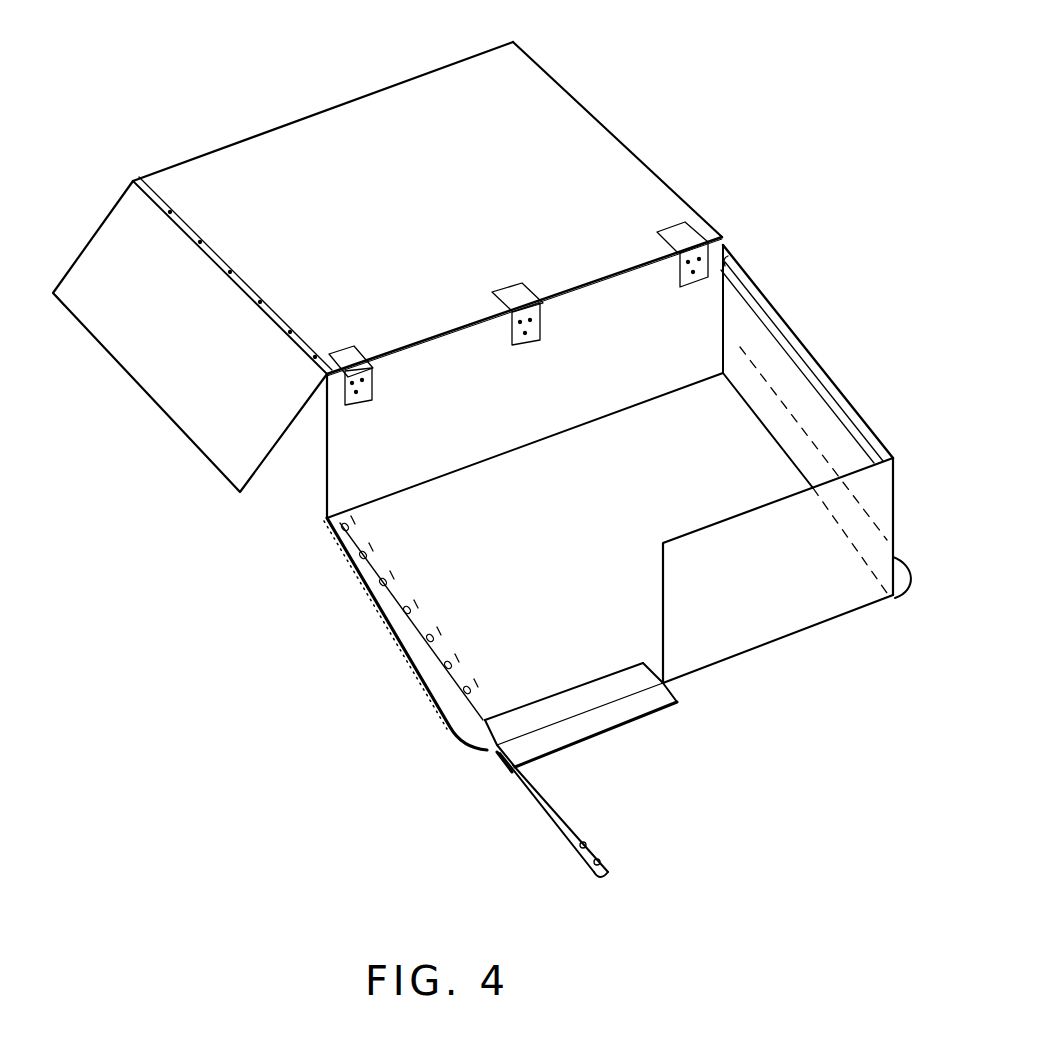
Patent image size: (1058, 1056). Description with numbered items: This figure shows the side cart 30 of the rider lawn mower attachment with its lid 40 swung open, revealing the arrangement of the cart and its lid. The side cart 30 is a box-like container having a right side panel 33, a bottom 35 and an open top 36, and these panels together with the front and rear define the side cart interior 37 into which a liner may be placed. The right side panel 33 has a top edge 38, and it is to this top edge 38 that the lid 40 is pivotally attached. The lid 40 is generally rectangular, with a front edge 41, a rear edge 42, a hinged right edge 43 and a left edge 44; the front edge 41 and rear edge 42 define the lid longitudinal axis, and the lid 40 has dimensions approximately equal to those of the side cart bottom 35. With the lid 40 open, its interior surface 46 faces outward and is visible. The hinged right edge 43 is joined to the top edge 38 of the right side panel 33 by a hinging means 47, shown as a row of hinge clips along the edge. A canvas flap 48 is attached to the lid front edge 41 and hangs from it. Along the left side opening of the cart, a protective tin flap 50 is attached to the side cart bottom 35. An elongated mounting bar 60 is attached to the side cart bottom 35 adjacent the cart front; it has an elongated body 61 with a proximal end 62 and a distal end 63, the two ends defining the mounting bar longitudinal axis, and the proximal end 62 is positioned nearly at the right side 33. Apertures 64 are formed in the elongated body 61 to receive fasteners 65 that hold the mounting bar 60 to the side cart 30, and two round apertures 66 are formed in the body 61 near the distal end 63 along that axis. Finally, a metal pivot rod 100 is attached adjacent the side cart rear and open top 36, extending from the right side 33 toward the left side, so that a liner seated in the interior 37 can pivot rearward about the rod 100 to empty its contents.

The side cart 30 is at (642, 476).
The right side panel 33 is at (467, 424).
The bottom 35 is at (572, 619).
The open top 36 is at (715, 283).
The side cart interior 37 is at (612, 486).
The top edge 38 is at (587, 290).
The lid 40 is at (387, 267).
The front edge 41 is at (213, 250).
The rear edge 42 is at (630, 145).
The hinged right edge 43 is at (395, 345).
The left edge 44 is at (303, 117).
The interior surface 46 is at (447, 184).
The hinging means 47 is at (342, 345).
The canvas flap 48 is at (230, 370).
The protective tin flap 50 is at (668, 708).
The mounting bar 60 is at (564, 817).
The elongated body 61 is at (507, 776).
The proximal end 62 is at (350, 525).
The distal end 63 is at (611, 877).
The apertures 64 is at (395, 624).
The fasteners 65 is at (380, 590).
The round apertures 66 is at (587, 840).
The metal pivot rod 100 is at (773, 318).